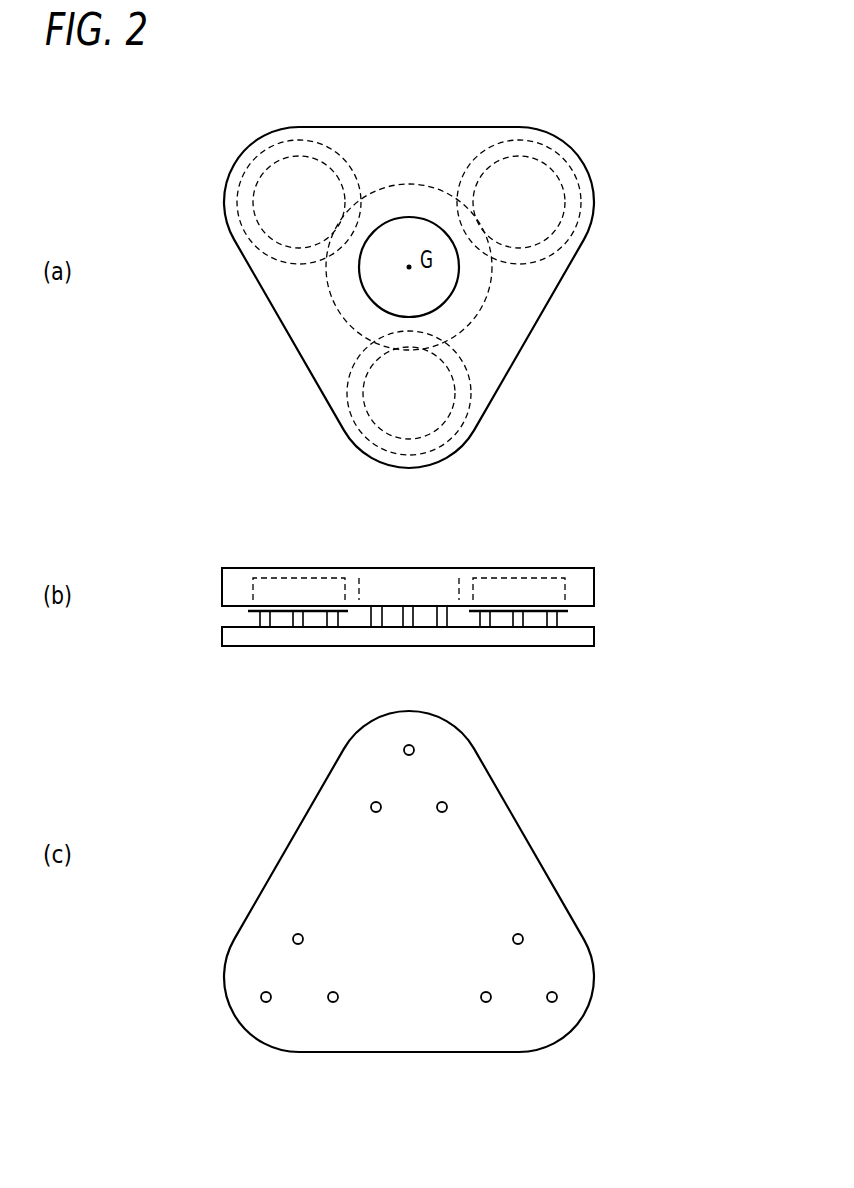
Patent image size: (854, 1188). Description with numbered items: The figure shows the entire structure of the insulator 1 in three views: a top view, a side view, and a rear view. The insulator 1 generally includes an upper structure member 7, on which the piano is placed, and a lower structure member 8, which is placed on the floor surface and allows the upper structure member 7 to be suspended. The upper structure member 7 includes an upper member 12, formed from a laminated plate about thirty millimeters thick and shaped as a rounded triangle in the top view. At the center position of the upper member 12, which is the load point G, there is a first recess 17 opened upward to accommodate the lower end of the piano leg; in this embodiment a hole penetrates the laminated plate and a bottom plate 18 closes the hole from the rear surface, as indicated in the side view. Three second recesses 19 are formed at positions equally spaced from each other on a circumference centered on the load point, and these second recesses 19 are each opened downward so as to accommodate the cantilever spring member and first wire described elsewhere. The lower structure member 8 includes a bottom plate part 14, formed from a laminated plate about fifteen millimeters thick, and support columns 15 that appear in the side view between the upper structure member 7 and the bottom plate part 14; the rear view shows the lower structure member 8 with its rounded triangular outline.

The insulator 1 is at (760, 612).
The upper structure member 7 is at (550, 302).
The lower structure member 8 is at (577, 647).
The upper member 12 is at (595, 590).
The bottom plate part 14 is at (595, 635).
The support columns 15 is at (557, 616).
The first recess 17 is at (397, 313).
The bottom plate 18 is at (388, 607).
The second recesses 19 is at (527, 158).